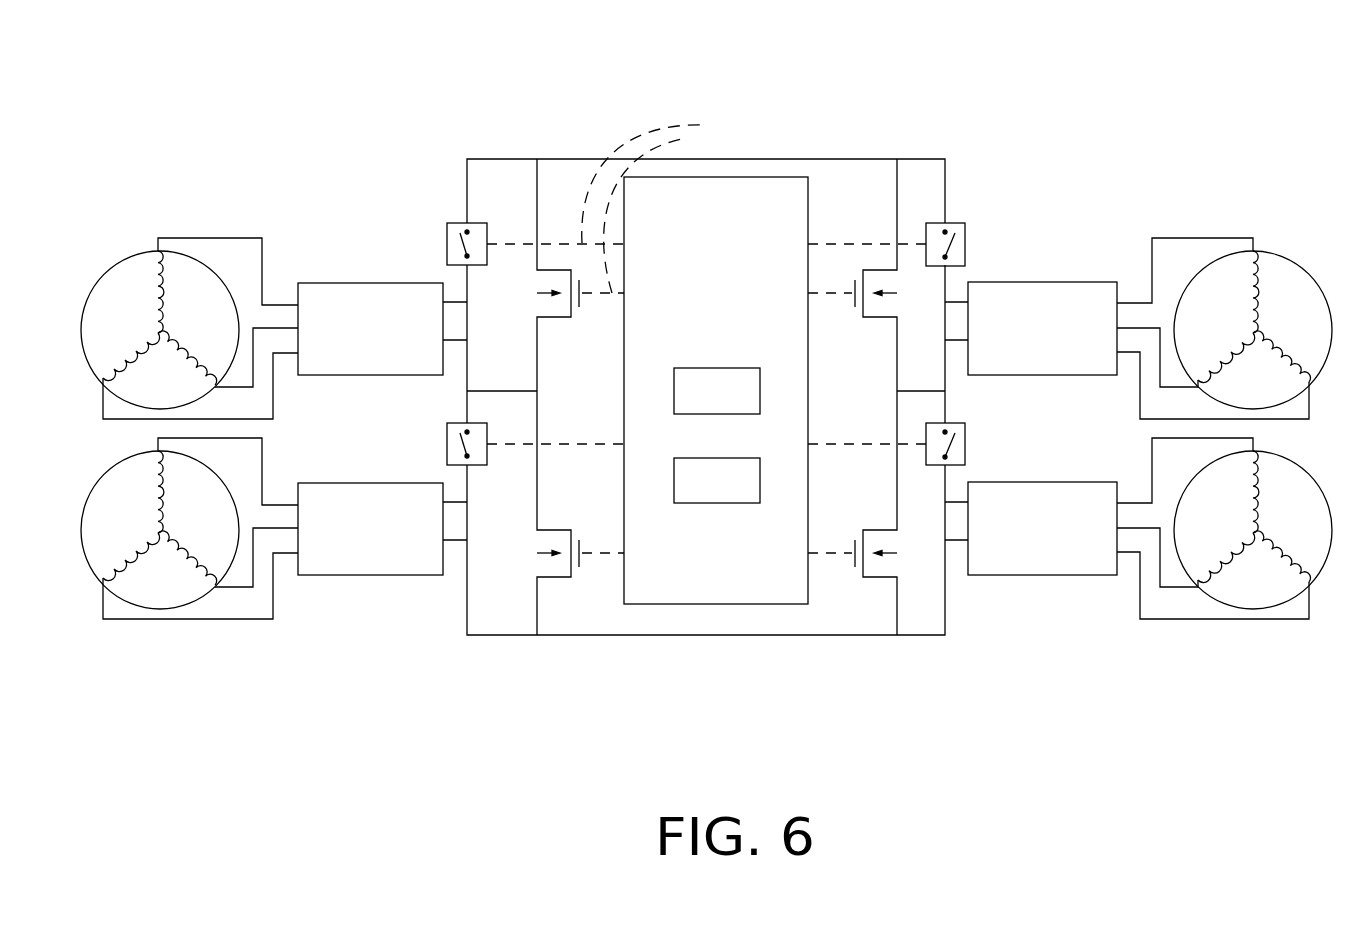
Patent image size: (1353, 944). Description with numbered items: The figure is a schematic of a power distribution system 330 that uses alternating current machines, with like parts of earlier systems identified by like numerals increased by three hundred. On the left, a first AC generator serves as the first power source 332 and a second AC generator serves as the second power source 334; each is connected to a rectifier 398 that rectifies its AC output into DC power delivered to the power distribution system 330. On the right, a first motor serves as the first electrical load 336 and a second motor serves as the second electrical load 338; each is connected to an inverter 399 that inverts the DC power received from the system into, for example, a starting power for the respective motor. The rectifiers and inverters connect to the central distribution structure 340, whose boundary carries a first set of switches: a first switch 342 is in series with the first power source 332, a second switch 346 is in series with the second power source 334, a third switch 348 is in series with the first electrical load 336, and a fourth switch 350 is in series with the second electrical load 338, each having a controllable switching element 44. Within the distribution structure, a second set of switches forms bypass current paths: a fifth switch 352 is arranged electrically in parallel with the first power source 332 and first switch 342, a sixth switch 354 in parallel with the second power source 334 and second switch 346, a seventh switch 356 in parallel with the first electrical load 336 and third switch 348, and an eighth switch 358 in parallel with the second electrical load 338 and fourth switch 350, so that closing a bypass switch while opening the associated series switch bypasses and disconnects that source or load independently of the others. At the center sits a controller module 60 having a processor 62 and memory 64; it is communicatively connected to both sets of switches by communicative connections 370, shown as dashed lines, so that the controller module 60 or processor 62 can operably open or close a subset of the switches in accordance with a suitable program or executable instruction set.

The power distribution system 330 is at (730, 41).
The first power source 332 is at (142, 240).
The second power source 334 is at (131, 616).
The first electrical load 336 is at (1273, 240).
The second electrical load 338 is at (1280, 616).
The power distribution system bus portion 340 is at (808, 159).
The first switch 342 is at (447, 246).
The second switch 346 is at (447, 446).
The third switch 348 is at (966, 245).
The fourth switch 350 is at (966, 445).
The fifth switch 352 is at (558, 348).
The sixth switch 354 is at (566, 601).
The seventh switch 356 is at (876, 348).
The eighth switch 358 is at (867, 601).
The communicative connections 370 is at (675, 205).
The rectifier 398 is at (370, 429).
The inverter 399 is at (1042, 428).
The controllable switching element 44 is at (477, 237).
The controller module 60 is at (702, 323).
The processor 62 is at (717, 391).
The memory 64 is at (717, 480).